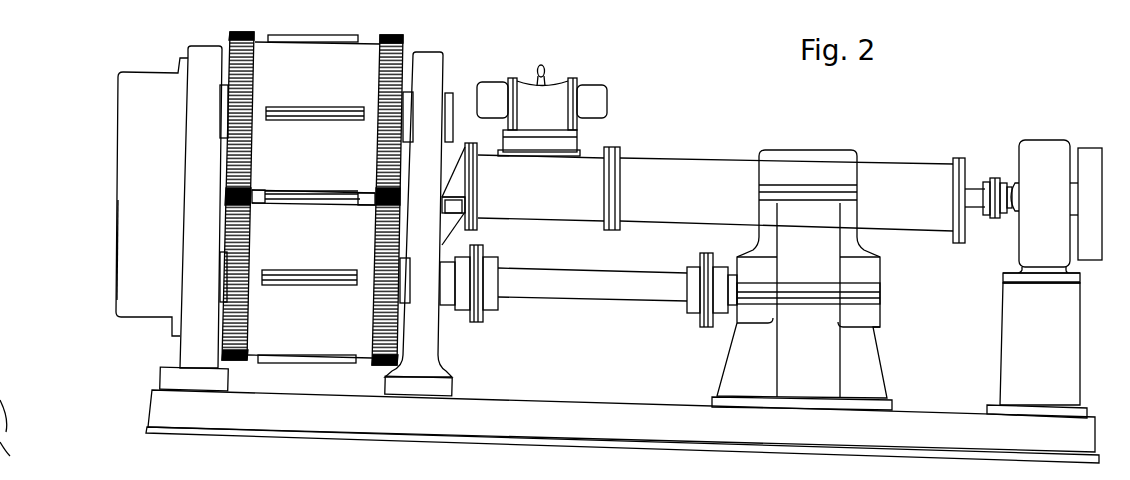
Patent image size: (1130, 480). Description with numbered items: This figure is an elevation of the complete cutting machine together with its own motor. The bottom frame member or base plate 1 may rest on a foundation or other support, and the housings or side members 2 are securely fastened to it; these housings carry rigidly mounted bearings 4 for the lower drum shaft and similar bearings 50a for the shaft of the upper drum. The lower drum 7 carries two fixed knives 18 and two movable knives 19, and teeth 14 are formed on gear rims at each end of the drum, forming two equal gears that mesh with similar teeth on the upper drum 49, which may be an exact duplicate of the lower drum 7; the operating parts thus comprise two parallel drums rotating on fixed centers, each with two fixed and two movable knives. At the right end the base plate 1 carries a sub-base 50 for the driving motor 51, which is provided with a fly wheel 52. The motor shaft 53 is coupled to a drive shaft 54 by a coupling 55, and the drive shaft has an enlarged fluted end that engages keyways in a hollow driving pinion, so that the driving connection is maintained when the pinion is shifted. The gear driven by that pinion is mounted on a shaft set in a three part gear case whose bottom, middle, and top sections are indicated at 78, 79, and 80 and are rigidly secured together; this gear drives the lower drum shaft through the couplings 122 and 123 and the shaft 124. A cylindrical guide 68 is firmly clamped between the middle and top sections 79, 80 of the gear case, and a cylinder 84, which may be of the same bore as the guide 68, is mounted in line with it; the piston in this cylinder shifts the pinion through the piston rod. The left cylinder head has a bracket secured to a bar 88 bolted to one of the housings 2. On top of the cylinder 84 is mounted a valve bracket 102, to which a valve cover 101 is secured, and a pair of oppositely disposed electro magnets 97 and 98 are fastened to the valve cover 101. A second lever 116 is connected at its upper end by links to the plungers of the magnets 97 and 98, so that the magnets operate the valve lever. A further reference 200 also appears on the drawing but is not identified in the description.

The base plate 1 is at (622, 426).
The housings 2 is at (200, 58).
The bearings 4 is at (218, 278).
The lower drum 7 is at (311, 280).
The teeth 14 is at (244, 35).
The fixed knives 18 is at (308, 38).
The movable knives 19 is at (305, 115).
The upper drum 49 is at (316, 117).
The sub-base 50 is at (1037, 342).
The bearings 50a is at (222, 115).
The driving motor 51 is at (1048, 203).
The fly wheel 52 is at (1090, 168).
The motor shaft 53 is at (1013, 185).
The drive shaft 54 is at (977, 190).
The coupling 55 is at (998, 216).
The cylindrical guide 68 is at (792, 200).
The bottom section of gear case 78 is at (802, 380).
The middle section of gear case 79 is at (802, 274).
The top section of gear case 80 is at (801, 168).
The cylinder 84 is at (542, 186).
The bar 88 is at (450, 213).
The electro magnet 97 is at (493, 88).
The electro magnet 98 is at (598, 98).
The valve cover 101 is at (542, 104).
The valve bracket 102 is at (572, 148).
The second lever 116 is at (541, 64).
The coupling 122 is at (705, 328).
The coupling 123 is at (475, 322).
The shaft 124 is at (565, 299).
The electric motor 200 is at (135, 80).